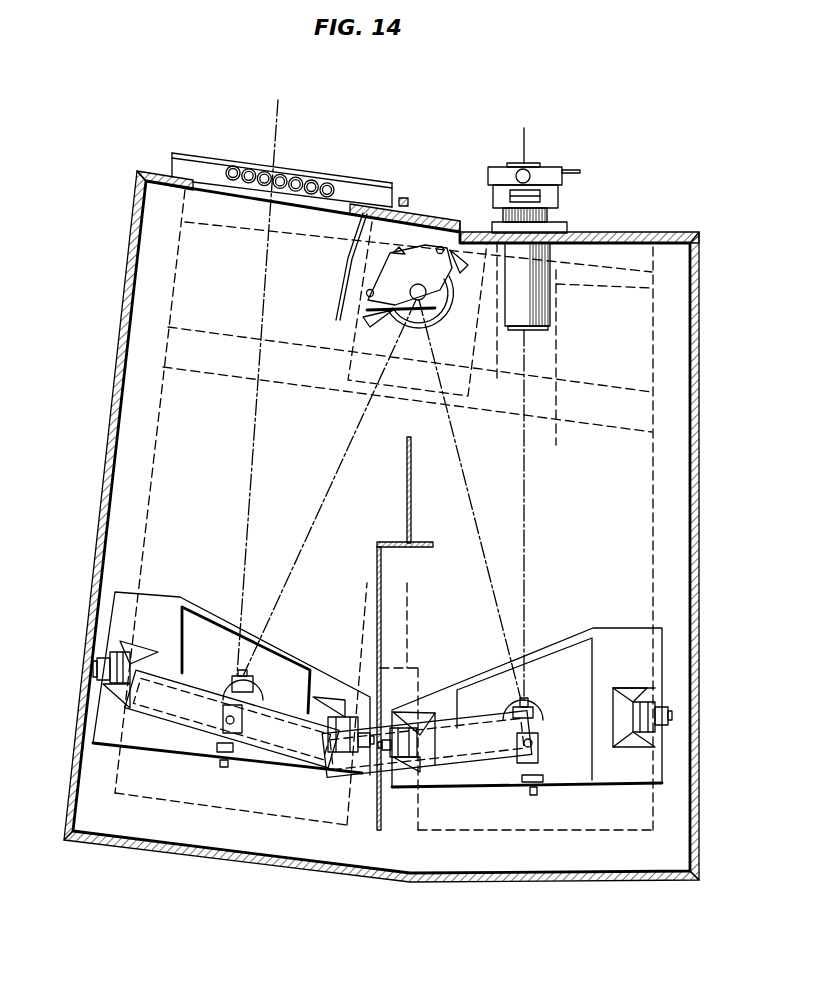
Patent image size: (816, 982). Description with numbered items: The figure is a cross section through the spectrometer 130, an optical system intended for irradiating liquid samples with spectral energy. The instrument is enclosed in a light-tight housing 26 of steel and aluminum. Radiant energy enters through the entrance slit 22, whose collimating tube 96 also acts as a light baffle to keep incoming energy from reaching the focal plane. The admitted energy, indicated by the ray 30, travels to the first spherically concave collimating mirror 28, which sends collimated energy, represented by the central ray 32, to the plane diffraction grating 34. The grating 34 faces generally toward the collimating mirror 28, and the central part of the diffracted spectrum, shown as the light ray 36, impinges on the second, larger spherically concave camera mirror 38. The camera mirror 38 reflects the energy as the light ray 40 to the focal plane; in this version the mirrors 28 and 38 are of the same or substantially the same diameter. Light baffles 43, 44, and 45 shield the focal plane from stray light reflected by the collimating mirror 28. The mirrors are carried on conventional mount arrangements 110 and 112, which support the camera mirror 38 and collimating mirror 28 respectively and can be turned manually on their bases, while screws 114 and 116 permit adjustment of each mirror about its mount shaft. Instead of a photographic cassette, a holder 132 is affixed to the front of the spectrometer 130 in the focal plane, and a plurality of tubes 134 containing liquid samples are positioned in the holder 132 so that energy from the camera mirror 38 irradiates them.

The entrance slit 22 is at (551, 162).
The light-tight housing 26 is at (116, 401).
The collimating mirror 28 is at (562, 740).
The ray 30 is at (527, 492).
The central ray 32 is at (472, 510).
The plane diffraction grating 34 is at (452, 300).
The light ray 36 is at (358, 434).
The camera mirror 38 is at (261, 718).
The light ray 40 is at (256, 460).
The light baffle 43 is at (337, 303).
The light baffle 44 is at (410, 498).
The light baffle 45 is at (383, 645).
The collimating tube 96 is at (543, 313).
The mount arrangement 110 is at (147, 724).
The mount arrangement 112 is at (487, 781).
The adjusting screw 114 is at (249, 677).
The adjusting screw 116 is at (220, 768).
The spectrometer 130 is at (85, 611).
The holder 132 is at (364, 176).
The tubes 134 is at (316, 181).